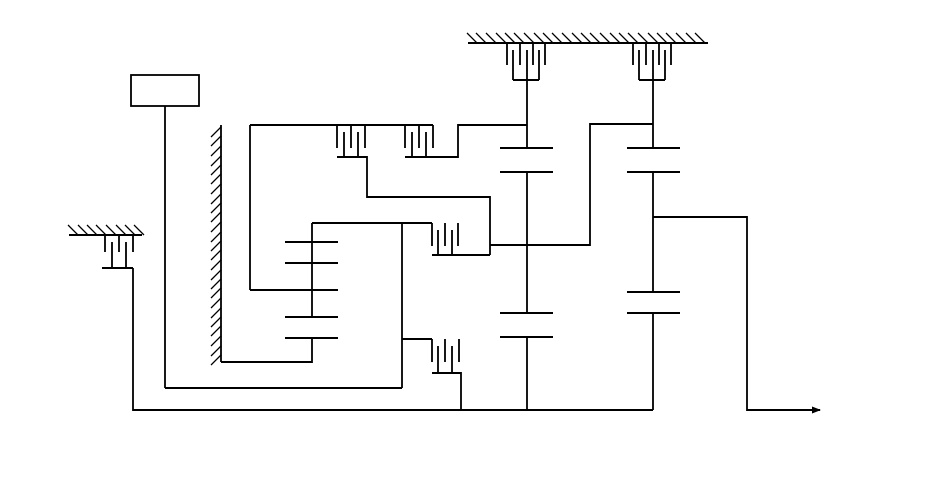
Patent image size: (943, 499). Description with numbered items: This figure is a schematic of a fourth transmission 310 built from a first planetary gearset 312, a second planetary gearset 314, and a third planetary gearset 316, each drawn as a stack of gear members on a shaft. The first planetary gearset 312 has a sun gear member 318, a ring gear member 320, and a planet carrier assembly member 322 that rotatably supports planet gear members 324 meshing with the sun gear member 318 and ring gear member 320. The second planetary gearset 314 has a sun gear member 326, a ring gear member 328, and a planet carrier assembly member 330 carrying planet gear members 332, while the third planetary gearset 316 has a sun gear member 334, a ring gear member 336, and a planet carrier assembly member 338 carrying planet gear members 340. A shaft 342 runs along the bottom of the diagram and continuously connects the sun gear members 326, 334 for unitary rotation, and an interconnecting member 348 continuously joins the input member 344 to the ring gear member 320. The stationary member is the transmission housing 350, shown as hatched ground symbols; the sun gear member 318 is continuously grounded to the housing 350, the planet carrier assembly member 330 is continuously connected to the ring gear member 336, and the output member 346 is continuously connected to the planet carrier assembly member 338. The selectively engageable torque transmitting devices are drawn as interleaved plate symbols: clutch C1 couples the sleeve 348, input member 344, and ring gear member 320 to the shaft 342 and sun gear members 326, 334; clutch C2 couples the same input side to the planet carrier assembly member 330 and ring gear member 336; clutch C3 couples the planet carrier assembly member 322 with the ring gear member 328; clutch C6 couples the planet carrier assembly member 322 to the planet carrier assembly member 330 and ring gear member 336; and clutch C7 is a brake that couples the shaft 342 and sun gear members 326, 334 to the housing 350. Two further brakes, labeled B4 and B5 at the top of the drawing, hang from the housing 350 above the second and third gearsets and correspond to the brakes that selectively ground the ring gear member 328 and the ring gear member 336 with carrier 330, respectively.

The transmission 310 is at (775, 124).
The first planetary gearset 312 is at (311, 343).
The second planetary gearset 314 is at (533, 272).
The third planetary gearset 316 is at (679, 245).
The sun gear member 318 is at (330, 337).
The ring gear member 320 is at (330, 243).
The planet carrier assembly member 322 is at (267, 291).
The planet gear members 324 is at (330, 313).
The sun gear member 326 is at (545, 335).
The ring gear member 328 is at (507, 149).
The planet carrier assembly member 330 is at (590, 250).
The planet gear members 332 is at (547, 173).
The sun gear member 334 is at (665, 313).
The ring gear member 336 is at (668, 147).
The planet carrier assembly member 338 is at (695, 218).
The planet gear members 340 is at (636, 173).
The shaft 342 is at (165, 412).
The input member 344 is at (163, 157).
The output member 346 is at (810, 409).
The interconnecting member 348 is at (230, 390).
The transmission housing 350 is at (97, 224).
The clutch C1 is at (469, 349).
The clutch C2 is at (422, 232).
The clutch C3 is at (394, 139).
The clutch C6 is at (327, 141).
The brake C7 is at (92, 251).
The brake B4 is at (563, 56).
The brake B5 is at (619, 54).